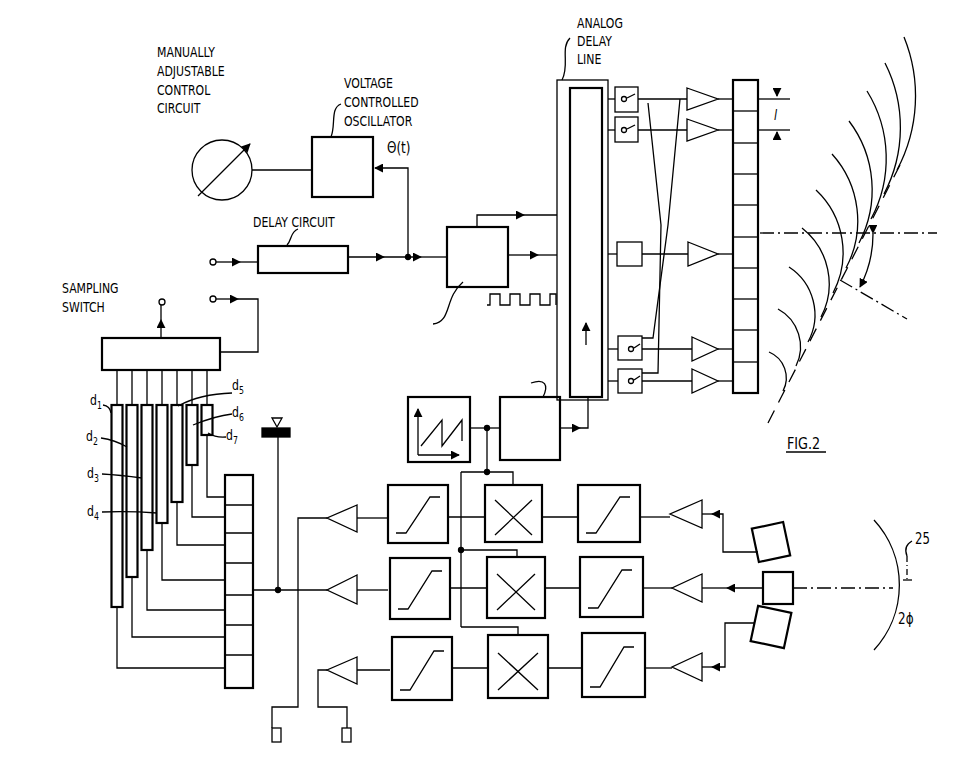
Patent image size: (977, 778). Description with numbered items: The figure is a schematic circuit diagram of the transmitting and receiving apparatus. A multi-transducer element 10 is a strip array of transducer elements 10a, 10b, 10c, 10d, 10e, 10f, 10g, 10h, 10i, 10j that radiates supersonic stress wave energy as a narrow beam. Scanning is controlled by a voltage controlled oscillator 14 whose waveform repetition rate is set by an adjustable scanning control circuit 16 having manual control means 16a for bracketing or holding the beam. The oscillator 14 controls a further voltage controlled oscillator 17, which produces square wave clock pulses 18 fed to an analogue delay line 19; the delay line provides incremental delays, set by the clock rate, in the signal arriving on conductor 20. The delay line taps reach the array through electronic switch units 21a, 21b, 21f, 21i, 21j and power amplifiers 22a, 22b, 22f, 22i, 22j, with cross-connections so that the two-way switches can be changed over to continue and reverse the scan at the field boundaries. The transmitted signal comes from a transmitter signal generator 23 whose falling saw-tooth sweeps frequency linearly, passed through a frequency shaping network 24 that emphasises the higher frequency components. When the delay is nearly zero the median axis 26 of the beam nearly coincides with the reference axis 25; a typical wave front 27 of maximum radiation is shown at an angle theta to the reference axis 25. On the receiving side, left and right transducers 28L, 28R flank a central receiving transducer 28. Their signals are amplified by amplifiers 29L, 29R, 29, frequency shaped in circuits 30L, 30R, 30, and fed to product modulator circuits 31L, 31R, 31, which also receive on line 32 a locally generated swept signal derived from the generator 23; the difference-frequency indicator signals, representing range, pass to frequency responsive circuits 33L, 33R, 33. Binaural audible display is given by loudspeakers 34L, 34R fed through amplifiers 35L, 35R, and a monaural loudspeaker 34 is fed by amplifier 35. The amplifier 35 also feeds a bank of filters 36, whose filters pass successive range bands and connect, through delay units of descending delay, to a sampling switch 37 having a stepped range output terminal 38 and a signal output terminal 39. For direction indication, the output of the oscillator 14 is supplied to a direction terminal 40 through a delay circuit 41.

The multi-transducer element 10 is at (765, 231).
The transducer element 10a is at (745, 101).
The transducer element 10b is at (745, 133).
The transducer element 10c is at (745, 164).
The transducer element 10d is at (745, 195).
The transducer element 10e is at (745, 227).
The transducer element 10f is at (745, 258).
The transducer element 10g is at (745, 289).
The transducer element 10h is at (745, 320).
The transducer element 10i is at (745, 352).
The transducer element 10j is at (742, 382).
The voltage controlled oscillator 14 is at (360, 197).
The adjustable scanning control circuit 16 is at (252, 170).
The control means 16a is at (208, 178).
The voltage controlled oscillator 17 is at (450, 276).
The clock pulses 18 is at (543, 311).
The analogue delay line 19 is at (582, 240).
The conductor 20 is at (590, 410).
The electronic switch unit 21a is at (613, 99).
The electronic switch unit 21b is at (628, 142).
The electronic switch unit 21f is at (636, 237).
The electronic switch unit 21i is at (628, 336).
The electronic switch unit 21j is at (638, 393).
The power amplifier 22a is at (700, 84).
The power amplifier 22b is at (703, 141).
The power amplifier 22f is at (714, 243).
The power amplifier 22i is at (706, 337).
The power amplifier 22j is at (706, 393).
The transmitter signal generator 23 is at (445, 397).
The frequency shaping network 24 is at (518, 409).
The reference axis 25 is at (910, 232).
The median axis 26 is at (893, 318).
The wave front 27 is at (887, 200).
The central receiving transducer 28 is at (778, 588).
The receiving transducer 28L is at (771, 542).
The receiving transducer 28R is at (771, 627).
The amplifier 29 is at (680, 574).
The amplifier 29L is at (682, 501).
The amplifier 29R is at (680, 653).
The frequency shaping circuit 30 is at (626, 587).
The frequency shaping circuit 30L is at (624, 513).
The frequency shaping circuit 30R is at (627, 665).
The modulator circuit 31 is at (533, 587).
The modulator circuit 31L is at (531, 513).
The modulator circuit 31R is at (535, 666).
The line 32 is at (460, 472).
The frequency responsive circuit 33 is at (438, 588).
The frequency responsive circuit 33L is at (436, 514).
The frequency responsive circuit 33R is at (440, 668).
The loudspeaker 34 is at (290, 436).
The loudspeaker 34L is at (272, 738).
The loudspeaker 34R is at (351, 738).
The amplifier 35 is at (357, 584).
The amplifier 35L is at (330, 609).
The amplifier 35R is at (354, 688).
The bank of filters 36 is at (238, 688).
The sampling switch 37 is at (161, 354).
The range output terminal 38 is at (165, 303).
The signal output terminal 39 is at (213, 296).
The direction terminal 40 is at (213, 258).
The delay circuit 41 is at (352, 259).